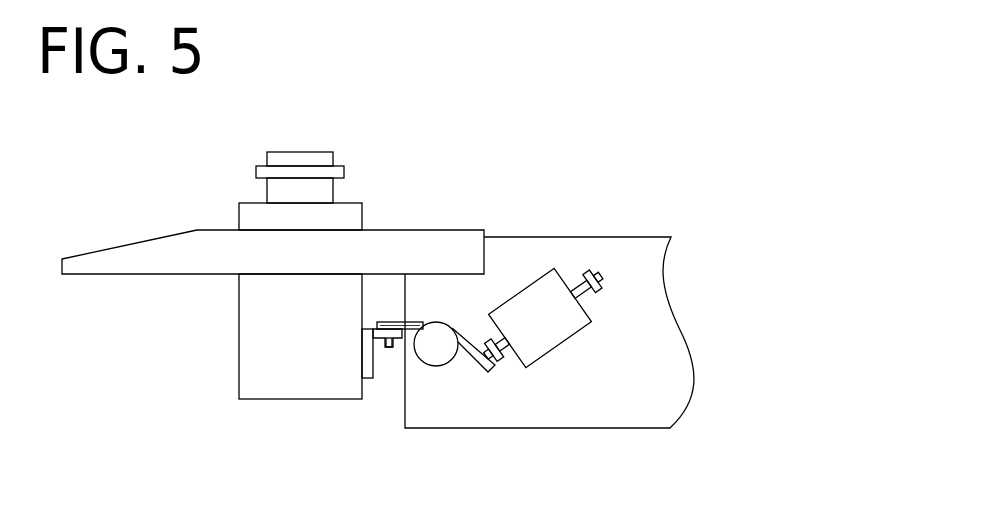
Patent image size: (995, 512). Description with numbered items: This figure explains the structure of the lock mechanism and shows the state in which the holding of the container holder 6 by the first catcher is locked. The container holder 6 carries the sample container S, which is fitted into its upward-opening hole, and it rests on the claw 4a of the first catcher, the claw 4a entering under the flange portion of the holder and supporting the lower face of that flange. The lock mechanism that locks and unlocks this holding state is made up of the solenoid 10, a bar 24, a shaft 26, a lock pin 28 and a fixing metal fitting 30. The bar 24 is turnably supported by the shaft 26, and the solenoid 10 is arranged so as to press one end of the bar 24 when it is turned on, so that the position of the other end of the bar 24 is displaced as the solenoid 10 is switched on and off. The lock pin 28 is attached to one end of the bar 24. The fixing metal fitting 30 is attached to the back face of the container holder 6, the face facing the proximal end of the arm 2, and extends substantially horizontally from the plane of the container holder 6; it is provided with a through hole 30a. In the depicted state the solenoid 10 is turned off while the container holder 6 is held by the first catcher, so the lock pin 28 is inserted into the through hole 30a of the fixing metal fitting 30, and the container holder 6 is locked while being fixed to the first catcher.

The arm 2 is at (637, 252).
The claw 4a is at (189, 253).
The container holder 6 is at (239, 314).
The sample container S is at (318, 158).
The solenoid 10 is at (543, 290).
The bar 24 is at (469, 353).
The shaft 26 is at (437, 355).
The lock pin 28 is at (389, 341).
The fixing metal fitting 30 is at (370, 326).
The through hole 30a is at (393, 322).